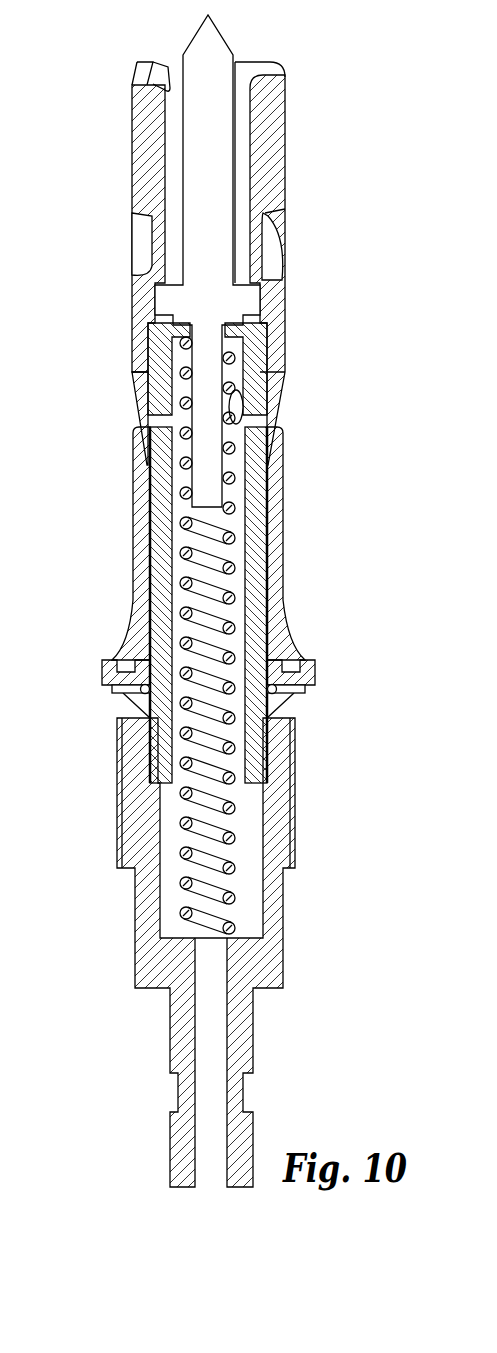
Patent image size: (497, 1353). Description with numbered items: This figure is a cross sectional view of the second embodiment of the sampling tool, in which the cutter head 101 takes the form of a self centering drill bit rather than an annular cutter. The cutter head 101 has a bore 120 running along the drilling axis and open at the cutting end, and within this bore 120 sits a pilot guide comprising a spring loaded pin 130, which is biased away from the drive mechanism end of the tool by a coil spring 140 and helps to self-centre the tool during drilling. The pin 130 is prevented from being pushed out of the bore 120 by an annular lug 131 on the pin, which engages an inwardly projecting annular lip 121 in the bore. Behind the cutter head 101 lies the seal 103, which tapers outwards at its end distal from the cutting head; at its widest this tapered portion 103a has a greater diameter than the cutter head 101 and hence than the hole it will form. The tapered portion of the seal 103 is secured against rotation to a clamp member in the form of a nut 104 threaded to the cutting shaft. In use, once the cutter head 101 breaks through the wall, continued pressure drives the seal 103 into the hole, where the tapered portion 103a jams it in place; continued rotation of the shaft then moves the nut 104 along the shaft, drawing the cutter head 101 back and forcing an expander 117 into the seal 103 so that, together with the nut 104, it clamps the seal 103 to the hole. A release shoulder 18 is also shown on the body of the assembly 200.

The cutter head 101 is at (145, 172).
The expander 117 is at (138, 405).
The bore 120 is at (250, 121).
The annular lip 121 is at (252, 280).
The pin 130 is at (235, 165).
The annular lug 131 is at (240, 337).
The seal 103 is at (133, 558).
The tapered portion 103a is at (290, 622).
The nut 104 is at (102, 672).
The injector assembly 200 is at (199, 952).
The release shoulder 18 is at (283, 955).
The coil spring 140 is at (233, 537).